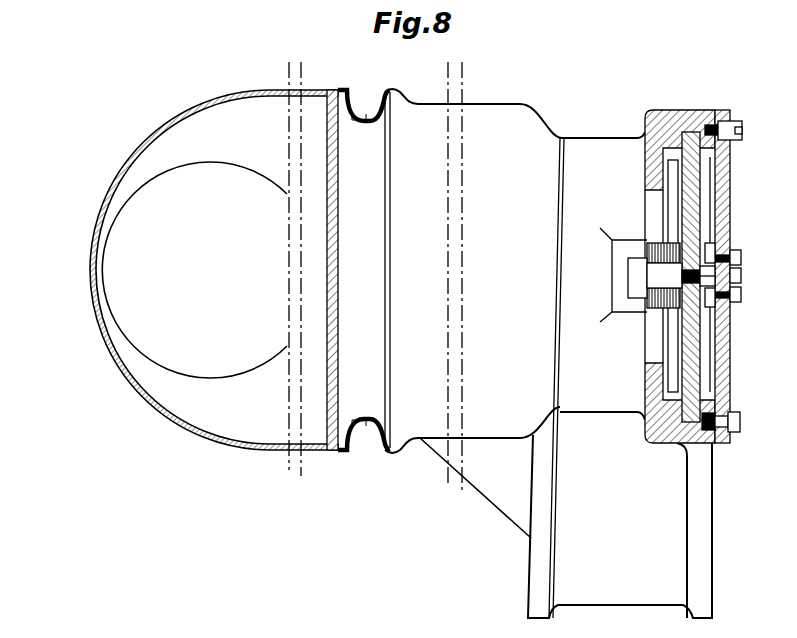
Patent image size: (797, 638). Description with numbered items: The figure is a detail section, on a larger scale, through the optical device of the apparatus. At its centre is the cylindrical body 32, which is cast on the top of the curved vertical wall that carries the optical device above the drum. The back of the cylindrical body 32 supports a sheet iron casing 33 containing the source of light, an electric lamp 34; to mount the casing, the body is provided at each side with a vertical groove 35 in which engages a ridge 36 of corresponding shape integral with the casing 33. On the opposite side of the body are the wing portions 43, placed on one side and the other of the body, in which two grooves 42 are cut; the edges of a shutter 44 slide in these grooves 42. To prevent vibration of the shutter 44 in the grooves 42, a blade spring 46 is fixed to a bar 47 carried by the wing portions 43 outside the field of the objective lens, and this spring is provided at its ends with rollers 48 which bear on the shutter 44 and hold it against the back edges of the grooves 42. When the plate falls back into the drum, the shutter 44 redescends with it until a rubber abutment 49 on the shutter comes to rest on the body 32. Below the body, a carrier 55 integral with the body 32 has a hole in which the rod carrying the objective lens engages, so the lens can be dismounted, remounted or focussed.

The cylindrical body 32 is at (515, 353).
The sheet iron casing 33 is at (180, 112).
The electric lamp 34 is at (217, 162).
The vertical groove 35 is at (370, 116).
The ridge 36 is at (371, 105).
The groove 42 is at (697, 132).
The wing portion 43 is at (670, 113).
The shutter 44 is at (682, 215).
The blade spring 46 is at (728, 308).
The bar 47 is at (725, 183).
The roller 48 is at (700, 308).
The rubber abutment 49 is at (647, 252).
The carrier 55 is at (566, 526).